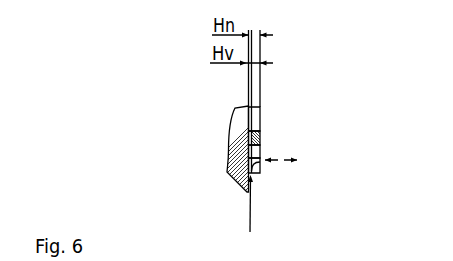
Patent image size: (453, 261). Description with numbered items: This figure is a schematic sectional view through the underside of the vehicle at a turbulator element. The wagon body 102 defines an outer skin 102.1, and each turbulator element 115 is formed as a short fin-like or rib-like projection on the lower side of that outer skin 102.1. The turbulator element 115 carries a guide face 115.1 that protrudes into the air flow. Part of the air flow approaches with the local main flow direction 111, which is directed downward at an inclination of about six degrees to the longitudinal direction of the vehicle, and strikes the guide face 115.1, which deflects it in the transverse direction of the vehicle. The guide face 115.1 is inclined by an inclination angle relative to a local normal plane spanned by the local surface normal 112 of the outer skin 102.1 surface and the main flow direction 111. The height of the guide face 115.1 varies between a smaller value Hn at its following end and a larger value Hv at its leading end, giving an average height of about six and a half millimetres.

The wagon body 102 is at (229, 126).
The outer skin 102.1 is at (255, 127).
The main flow direction 111 is at (247, 217).
The local surface normal 112 is at (282, 156).
The turbulator element 115 is at (261, 144).
The guide face 115.1 is at (261, 167).